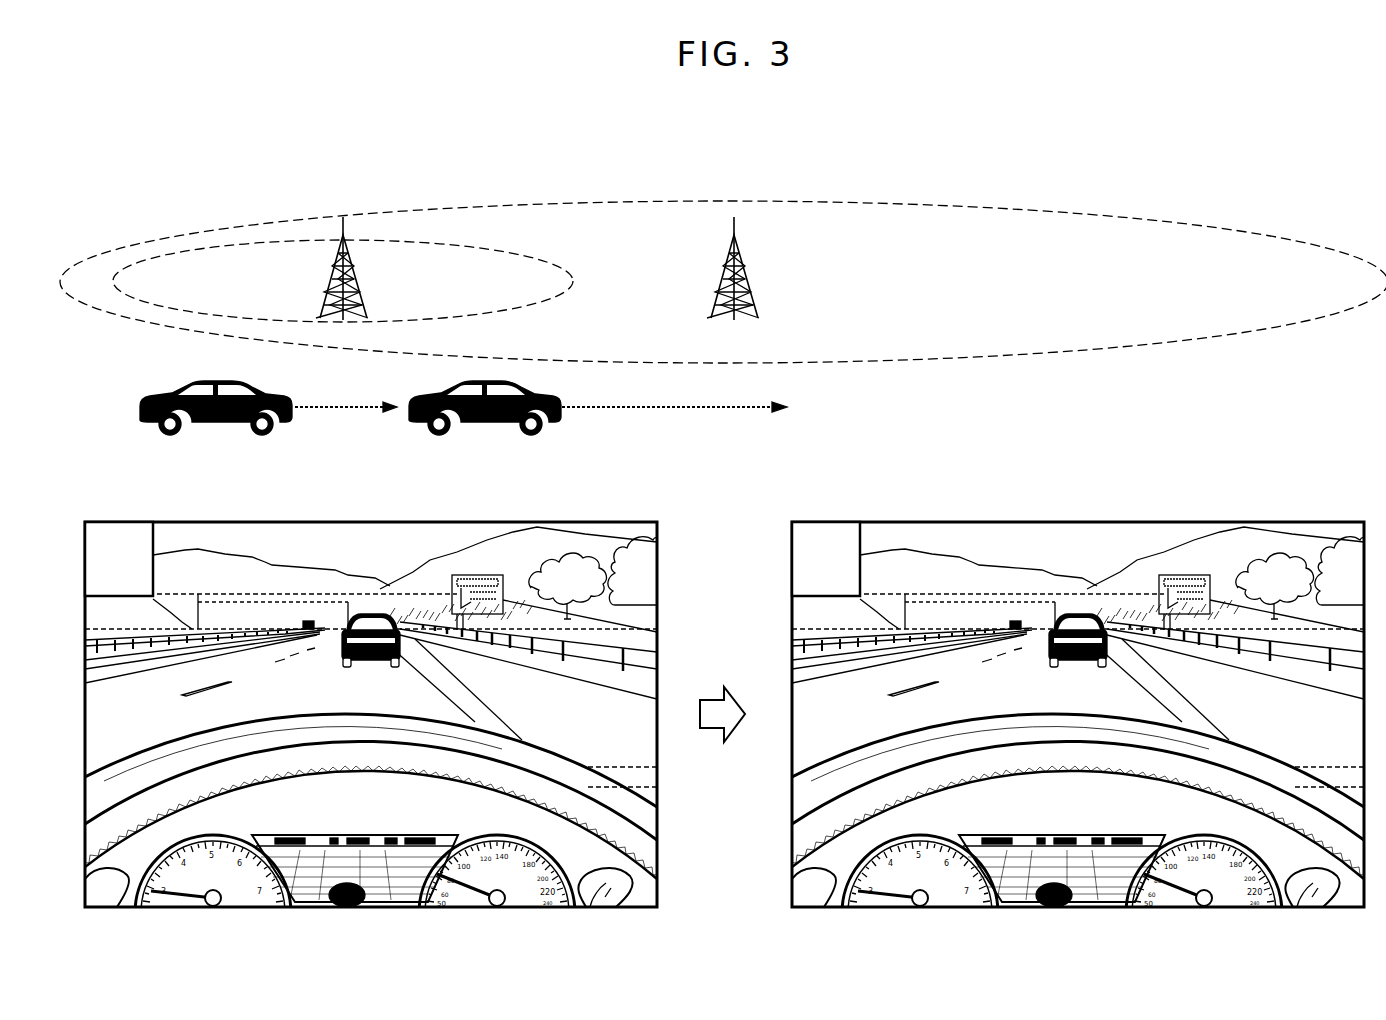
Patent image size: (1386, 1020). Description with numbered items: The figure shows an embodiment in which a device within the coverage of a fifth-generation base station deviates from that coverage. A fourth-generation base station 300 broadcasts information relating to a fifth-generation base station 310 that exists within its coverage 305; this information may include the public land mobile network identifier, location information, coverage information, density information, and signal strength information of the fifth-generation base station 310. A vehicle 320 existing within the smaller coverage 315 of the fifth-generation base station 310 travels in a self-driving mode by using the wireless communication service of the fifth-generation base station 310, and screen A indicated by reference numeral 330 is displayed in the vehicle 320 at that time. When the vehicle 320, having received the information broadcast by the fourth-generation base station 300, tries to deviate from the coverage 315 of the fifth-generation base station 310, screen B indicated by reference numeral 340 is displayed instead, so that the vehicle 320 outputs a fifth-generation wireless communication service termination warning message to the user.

The 4G base station 300 is at (752, 270).
The coverage 305 is at (1143, 207).
The 5G base station 310 is at (362, 272).
The coverage 315 is at (555, 256).
The vehicle 320 is at (270, 433).
The screen A 330 is at (372, 522).
The screen B 340 is at (1078, 522).